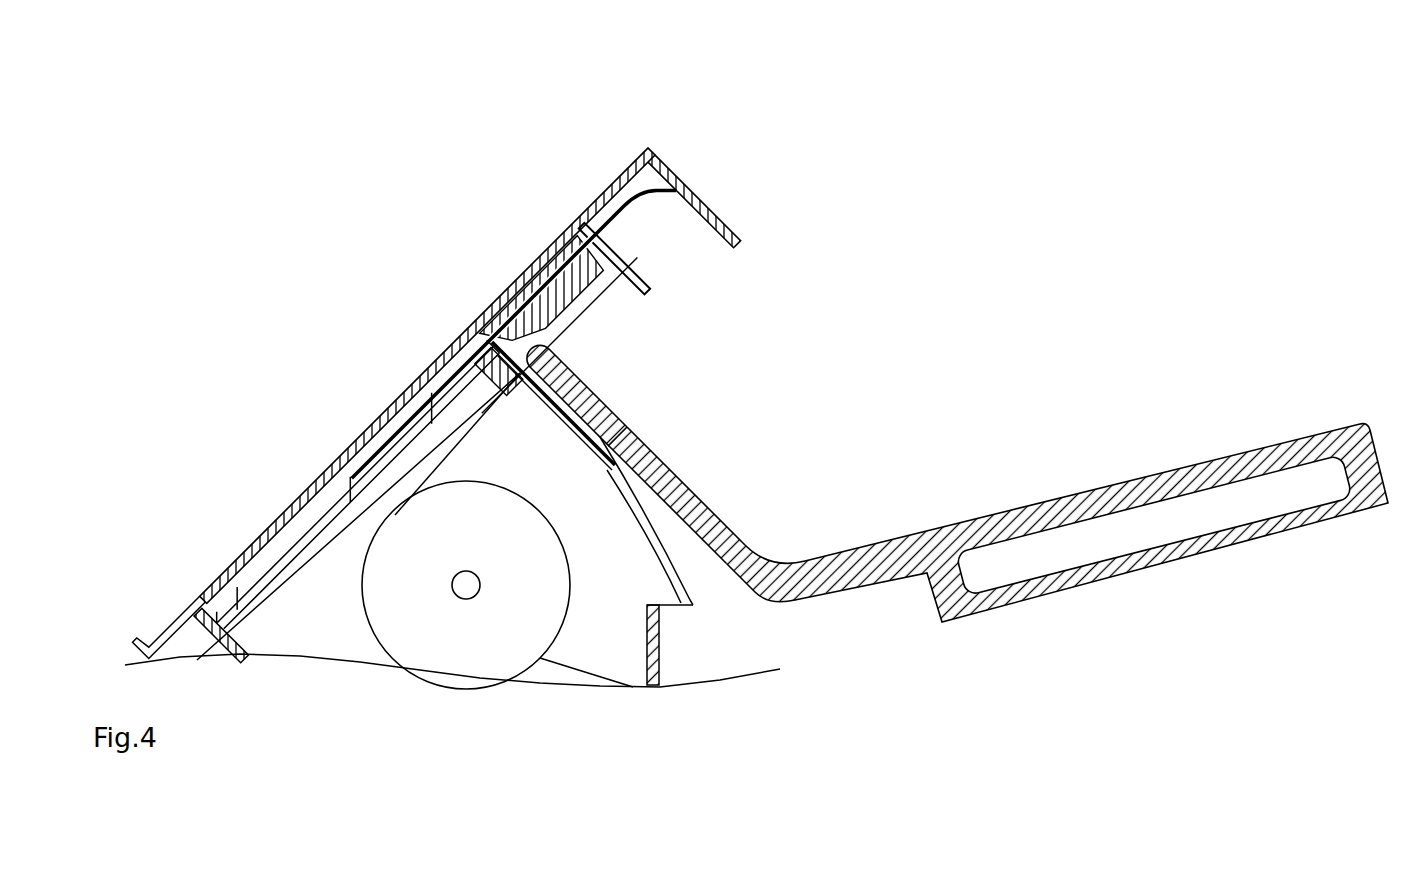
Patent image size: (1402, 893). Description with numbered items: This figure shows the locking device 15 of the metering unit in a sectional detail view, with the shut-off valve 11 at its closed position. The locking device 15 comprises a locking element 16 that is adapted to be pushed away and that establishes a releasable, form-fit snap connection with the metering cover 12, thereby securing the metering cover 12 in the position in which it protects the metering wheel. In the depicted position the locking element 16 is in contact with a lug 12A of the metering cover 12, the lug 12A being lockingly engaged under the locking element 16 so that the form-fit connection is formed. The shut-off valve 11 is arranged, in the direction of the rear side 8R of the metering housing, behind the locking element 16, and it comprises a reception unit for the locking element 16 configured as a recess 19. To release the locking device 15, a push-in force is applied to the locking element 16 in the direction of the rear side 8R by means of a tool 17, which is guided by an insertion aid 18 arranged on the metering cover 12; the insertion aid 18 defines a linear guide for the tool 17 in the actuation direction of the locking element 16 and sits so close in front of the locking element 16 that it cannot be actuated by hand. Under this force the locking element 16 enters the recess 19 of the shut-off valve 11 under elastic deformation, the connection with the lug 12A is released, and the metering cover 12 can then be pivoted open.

The rear side 8R is at (385, 197).
The locking device 15 is at (450, 305).
The shut-off valve 11 is at (735, 205).
The locking element 16 is at (572, 295).
The recess 19 is at (490, 307).
The lug 12A is at (488, 357).
The insertion aid 18 is at (627, 407).
The metering cover 12 is at (653, 472).
The tool 17 is at (878, 545).